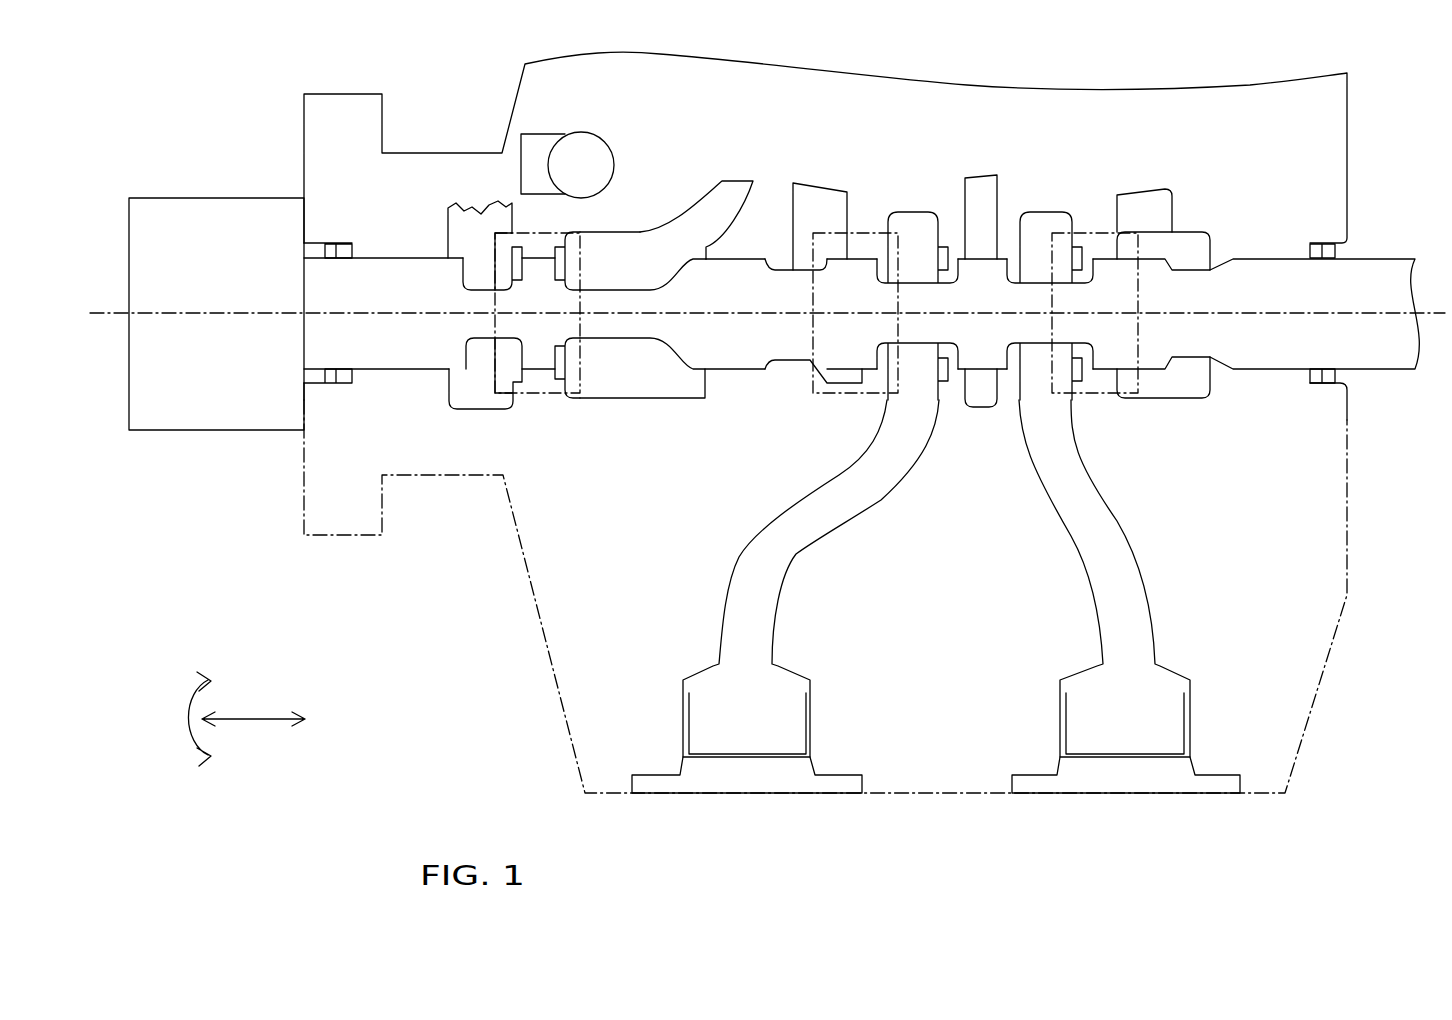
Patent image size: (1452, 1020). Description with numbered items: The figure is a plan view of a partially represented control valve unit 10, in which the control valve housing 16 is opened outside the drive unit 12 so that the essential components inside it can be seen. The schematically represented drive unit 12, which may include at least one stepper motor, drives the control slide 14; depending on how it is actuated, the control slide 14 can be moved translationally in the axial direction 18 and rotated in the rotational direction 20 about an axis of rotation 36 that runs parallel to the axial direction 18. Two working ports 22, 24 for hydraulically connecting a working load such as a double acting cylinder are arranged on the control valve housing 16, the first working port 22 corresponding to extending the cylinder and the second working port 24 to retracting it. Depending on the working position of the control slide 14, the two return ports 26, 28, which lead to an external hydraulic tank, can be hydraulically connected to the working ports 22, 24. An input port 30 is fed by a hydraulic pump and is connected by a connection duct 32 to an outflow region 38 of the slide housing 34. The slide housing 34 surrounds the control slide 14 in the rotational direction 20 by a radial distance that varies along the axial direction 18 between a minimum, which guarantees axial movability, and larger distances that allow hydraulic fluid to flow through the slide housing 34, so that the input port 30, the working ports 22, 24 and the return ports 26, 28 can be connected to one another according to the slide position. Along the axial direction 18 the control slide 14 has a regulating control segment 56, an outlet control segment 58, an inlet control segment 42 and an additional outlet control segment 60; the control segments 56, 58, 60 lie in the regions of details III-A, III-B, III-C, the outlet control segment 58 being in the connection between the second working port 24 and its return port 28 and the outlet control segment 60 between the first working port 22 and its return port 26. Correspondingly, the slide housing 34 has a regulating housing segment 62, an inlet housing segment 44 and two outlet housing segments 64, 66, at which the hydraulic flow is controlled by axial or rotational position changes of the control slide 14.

The control valve unit 10 is at (421, 750).
The drive unit 12 is at (231, 266).
The control slide 14 is at (388, 213).
The control valve housing 16 is at (412, 177).
The axial direction 18 is at (265, 718).
The rotational direction 20 is at (185, 690).
The first working port 22 is at (1131, 742).
The second working port 24 is at (731, 742).
The return port 26 is at (1143, 205).
The return port 28 is at (817, 210).
The input port 30 is at (587, 147).
The connection duct 32 is at (455, 217).
The slide housing 34 is at (498, 197).
The axis of rotation 36 is at (105, 308).
The outflow region 38 is at (483, 268).
The inlet control segment 42 is at (997, 304).
The inlet housing segment 44 is at (957, 233).
The regulating control segment 56 is at (552, 306).
The outlet control segment 58 is at (865, 304).
The additional outlet control segment 60 is at (1123, 304).
The regulating housing segment 62 is at (546, 382).
The outlet housing segment 64 is at (862, 392).
The outlet housing segment 66 is at (1096, 400).
The detail III-A is at (582, 377).
The detail III-B is at (850, 232).
The detail III-C is at (1100, 227).